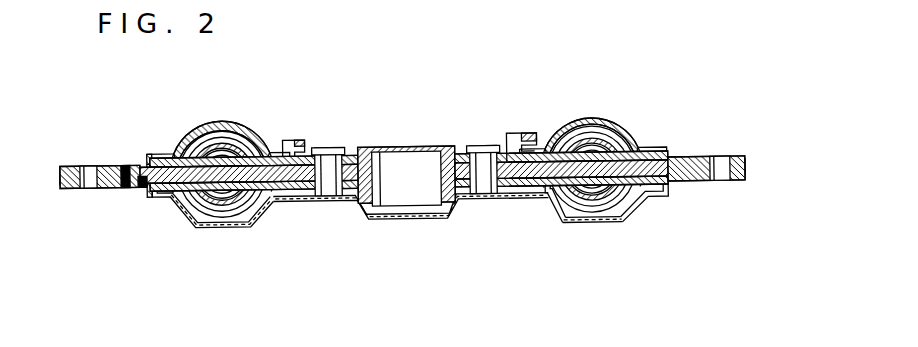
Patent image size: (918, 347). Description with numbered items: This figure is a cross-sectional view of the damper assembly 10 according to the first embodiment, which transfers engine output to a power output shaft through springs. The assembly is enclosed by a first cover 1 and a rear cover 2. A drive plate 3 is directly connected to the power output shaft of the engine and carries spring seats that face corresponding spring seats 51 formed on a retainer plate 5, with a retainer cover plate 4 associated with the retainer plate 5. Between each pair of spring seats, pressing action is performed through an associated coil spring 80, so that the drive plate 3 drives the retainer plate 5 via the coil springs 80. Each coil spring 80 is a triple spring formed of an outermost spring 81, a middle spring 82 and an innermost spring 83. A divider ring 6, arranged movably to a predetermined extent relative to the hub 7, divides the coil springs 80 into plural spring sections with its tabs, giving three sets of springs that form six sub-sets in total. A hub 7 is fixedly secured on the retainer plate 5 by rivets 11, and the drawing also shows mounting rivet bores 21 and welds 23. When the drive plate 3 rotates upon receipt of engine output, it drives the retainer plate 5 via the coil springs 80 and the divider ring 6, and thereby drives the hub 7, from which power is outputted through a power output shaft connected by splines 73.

The damper assembly 10 is at (407, 164).
The first cover 1 is at (640, 241).
The rear cover 2 is at (592, 121).
The drive plate 3 is at (403, 210).
The retainer cover plate 4 is at (517, 110).
The retainer plate 5 is at (593, 259).
The spring seats 51 is at (551, 238).
The divider ring 6 is at (411, 237).
The hub 7 is at (407, 196).
The splines 73 is at (406, 141).
The rivets 11 is at (476, 135).
The mounting rivet bores 21 is at (89, 145).
The welds 23 is at (143, 225).
The coil springs 80 is at (621, 109).
The outermost spring 81 is at (621, 149).
The middle spring 82 is at (604, 129).
The innermost spring 83 is at (591, 118).